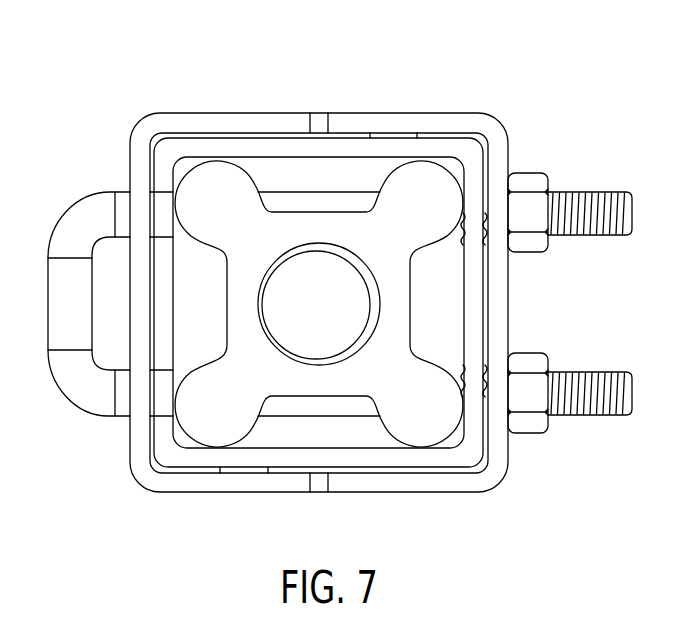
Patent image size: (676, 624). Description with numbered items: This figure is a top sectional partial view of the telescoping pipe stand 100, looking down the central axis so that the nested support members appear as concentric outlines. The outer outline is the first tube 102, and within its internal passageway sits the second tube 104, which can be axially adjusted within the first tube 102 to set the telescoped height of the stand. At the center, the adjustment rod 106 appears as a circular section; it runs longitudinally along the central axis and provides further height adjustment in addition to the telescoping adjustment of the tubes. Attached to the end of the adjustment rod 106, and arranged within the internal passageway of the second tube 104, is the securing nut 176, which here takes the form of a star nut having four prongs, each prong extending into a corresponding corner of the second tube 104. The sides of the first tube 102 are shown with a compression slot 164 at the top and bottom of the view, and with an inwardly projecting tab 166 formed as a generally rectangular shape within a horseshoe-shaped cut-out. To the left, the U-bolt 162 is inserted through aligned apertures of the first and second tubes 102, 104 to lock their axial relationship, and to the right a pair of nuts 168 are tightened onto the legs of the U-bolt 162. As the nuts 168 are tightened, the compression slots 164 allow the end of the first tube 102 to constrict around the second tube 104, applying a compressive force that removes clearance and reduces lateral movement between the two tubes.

The telescoping pipe stand 100 is at (561, 94).
The first tube 102 is at (373, 112).
The second tube 104 is at (483, 142).
The adjustment rod 106 is at (287, 283).
The U-bolt 162 is at (78, 217).
The compression slot 164 is at (311, 126).
The inwardly projecting tab 166 is at (408, 132).
The nut 168 is at (530, 180).
The securing nut 176 is at (396, 309).